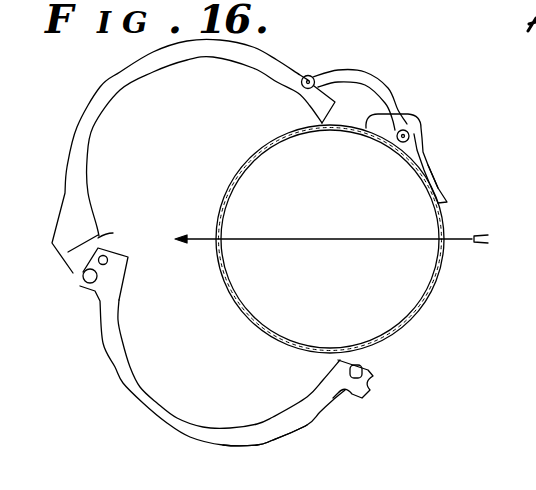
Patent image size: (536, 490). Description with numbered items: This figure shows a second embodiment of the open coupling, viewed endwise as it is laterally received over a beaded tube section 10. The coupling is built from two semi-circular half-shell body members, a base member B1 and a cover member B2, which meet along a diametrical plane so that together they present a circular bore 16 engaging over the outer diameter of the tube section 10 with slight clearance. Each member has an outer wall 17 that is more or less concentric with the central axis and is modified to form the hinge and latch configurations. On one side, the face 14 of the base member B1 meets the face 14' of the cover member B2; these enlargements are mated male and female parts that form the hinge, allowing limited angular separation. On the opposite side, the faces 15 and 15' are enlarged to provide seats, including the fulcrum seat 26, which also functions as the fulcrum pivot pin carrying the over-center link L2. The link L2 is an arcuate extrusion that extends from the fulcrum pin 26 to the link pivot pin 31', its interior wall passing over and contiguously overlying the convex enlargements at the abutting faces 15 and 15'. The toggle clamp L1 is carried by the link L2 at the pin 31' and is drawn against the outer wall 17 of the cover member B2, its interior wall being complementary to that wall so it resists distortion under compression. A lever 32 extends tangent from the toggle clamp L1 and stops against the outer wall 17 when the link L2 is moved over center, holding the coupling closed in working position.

The beaded tube section 10 is at (447, 270).
The circular bore 16 is at (207, 60).
The outer wall 17 is at (271, 440).
The base member B1 is at (119, 383).
The cover member B2 is at (106, 72).
The face 14 is at (125, 271).
The face 14' is at (120, 225).
The face 15 is at (375, 374).
The face 15' is at (329, 124).
The fulcrum seat 26 is at (311, 75).
The link pivot pin 31' is at (440, 127).
The lever 32 is at (437, 175).
The toggle clamp L1 is at (442, 155).
The over-center link L2 is at (400, 62).